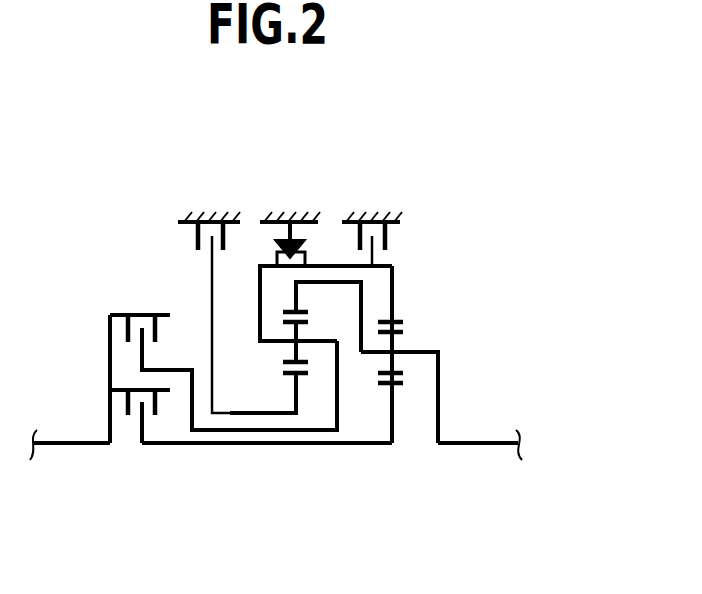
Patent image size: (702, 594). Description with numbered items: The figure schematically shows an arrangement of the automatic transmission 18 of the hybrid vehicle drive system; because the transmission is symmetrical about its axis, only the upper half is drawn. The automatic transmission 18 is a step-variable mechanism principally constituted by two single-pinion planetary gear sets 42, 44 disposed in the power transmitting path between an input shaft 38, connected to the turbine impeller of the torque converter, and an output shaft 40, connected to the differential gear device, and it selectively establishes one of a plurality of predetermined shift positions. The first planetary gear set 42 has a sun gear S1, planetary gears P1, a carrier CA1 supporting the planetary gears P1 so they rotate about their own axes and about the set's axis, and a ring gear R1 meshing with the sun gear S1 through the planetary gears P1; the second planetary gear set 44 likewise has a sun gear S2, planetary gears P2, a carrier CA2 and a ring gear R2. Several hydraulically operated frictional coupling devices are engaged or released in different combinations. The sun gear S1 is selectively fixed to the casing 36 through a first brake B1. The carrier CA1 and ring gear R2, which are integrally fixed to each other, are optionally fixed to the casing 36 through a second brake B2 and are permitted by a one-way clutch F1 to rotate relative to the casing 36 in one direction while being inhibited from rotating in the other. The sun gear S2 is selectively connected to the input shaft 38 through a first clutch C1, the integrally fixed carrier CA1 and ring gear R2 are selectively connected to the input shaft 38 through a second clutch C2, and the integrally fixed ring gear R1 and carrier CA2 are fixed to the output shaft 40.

The automatic transmission 18 is at (133, 196).
The casing 36 is at (213, 216).
The input shaft 38 is at (72, 446).
The output shaft 40 is at (482, 445).
The planetary gear set 42 is at (293, 447).
The planetary gear set 44 is at (390, 447).
The first clutch C1 is at (123, 379).
The second clutch C2 is at (223, 358).
The first brake B1 is at (203, 237).
The second brake B2 is at (382, 244).
The one-way clutch F1 is at (298, 244).
The ring gear R1 is at (295, 308).
The planetary gear P1 is at (307, 321).
The carrier CA1 is at (291, 346).
The sun gear S1 is at (292, 383).
The ring gear R2 is at (394, 318).
The planetary gear P2 is at (384, 372).
The carrier CA2 is at (413, 350).
The sun gear S2 is at (392, 388).